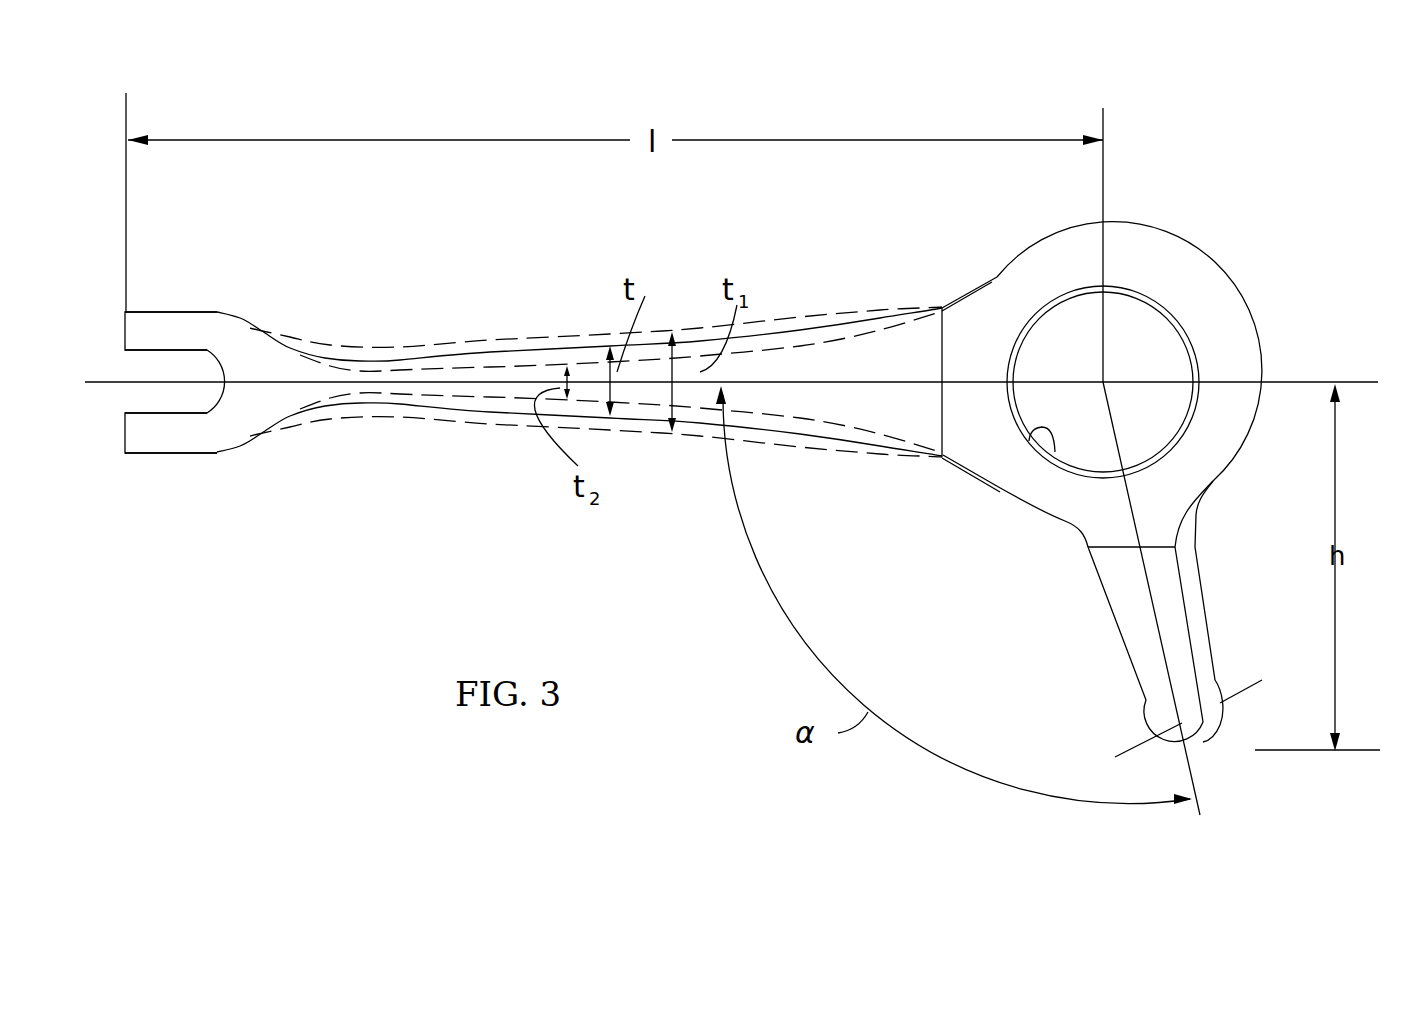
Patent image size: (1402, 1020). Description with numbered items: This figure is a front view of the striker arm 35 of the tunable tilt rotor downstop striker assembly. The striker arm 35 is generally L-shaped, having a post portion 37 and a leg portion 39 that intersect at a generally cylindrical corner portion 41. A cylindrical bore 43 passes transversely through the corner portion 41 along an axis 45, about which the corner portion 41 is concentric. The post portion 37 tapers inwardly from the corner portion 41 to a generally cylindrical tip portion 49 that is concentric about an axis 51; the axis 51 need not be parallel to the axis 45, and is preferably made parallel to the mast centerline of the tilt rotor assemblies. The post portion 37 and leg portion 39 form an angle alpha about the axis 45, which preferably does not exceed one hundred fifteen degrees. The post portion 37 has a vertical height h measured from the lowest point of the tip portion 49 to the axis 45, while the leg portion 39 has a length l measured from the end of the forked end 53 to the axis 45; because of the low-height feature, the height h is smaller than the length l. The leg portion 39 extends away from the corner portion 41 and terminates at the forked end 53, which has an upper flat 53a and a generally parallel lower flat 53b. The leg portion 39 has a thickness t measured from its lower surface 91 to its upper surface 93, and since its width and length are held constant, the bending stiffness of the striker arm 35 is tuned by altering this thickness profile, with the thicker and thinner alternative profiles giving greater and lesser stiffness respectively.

The striker arm 35 is at (342, 514).
The post portion 37 is at (1122, 640).
The leg portion 39 is at (491, 340).
The corner portion 41 is at (1171, 250).
The cylindrical bore 43 is at (1028, 438).
The axis 45 is at (1103, 382).
The tip portion 49 is at (1205, 744).
The axis 51 is at (1247, 684).
The forked end 53 is at (228, 298).
The upper flat 53a is at (152, 311).
The lower flat 53b is at (146, 455).
The lower surface 91 is at (460, 412).
The upper surface 93 is at (391, 356).